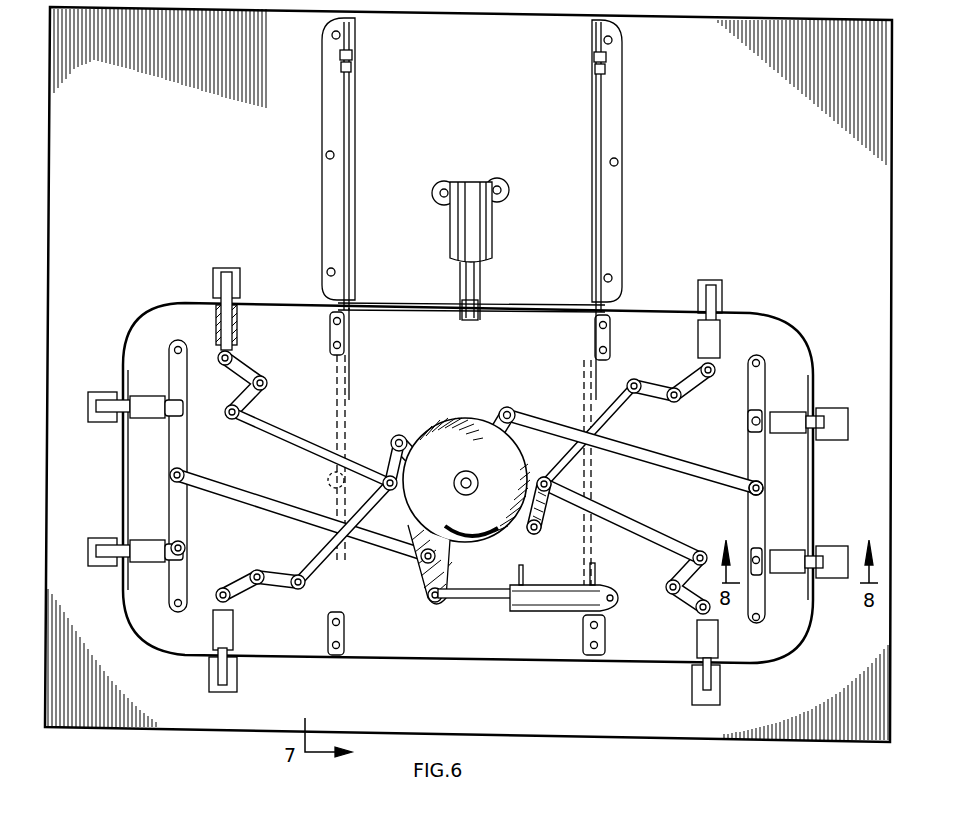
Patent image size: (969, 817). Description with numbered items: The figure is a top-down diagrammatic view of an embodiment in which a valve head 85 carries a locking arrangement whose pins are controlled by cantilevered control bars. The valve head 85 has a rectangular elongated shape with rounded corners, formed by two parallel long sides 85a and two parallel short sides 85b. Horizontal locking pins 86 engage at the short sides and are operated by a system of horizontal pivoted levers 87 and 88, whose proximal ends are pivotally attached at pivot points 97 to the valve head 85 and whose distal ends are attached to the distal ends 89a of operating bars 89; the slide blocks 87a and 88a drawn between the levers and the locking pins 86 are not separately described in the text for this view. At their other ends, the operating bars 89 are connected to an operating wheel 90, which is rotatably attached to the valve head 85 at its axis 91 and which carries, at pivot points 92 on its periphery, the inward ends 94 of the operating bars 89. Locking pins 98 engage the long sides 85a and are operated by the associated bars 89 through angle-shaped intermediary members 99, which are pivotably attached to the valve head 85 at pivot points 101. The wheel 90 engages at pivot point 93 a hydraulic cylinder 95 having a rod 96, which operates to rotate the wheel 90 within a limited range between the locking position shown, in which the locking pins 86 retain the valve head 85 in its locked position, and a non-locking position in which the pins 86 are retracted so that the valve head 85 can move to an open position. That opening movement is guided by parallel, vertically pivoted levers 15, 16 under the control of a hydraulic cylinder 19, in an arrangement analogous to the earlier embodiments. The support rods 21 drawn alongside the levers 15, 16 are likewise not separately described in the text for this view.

The vertically pivoted lever 15 is at (462, 160).
The vertically pivoted lever 16 is at (325, 210).
The hydraulic cylinder 19 is at (492, 232).
The support rod 21 is at (352, 122).
The valve head 85 is at (765, 320).
The long sides 85a is at (650, 305).
The short sides 85b is at (122, 472).
The horizontal locking pins 86 is at (838, 420).
The horizontal pivoted lever 87 is at (760, 455).
The slide block 87a is at (764, 414).
The horizontal pivoted lever 88 is at (762, 520).
The lower slide block 88a is at (760, 577).
The operating bars 89 is at (622, 408).
The distal ends of operating bars 89a is at (746, 503).
The operating wheel 90 is at (465, 418).
The axis 91 is at (462, 477).
The pivot points 92 is at (398, 437).
The pivot point 93 is at (430, 601).
The inward ends of operating bars 94 is at (520, 408).
The hydraulic cylinder 95 is at (545, 611).
The rod 96 is at (470, 600).
The pivot points 97 is at (760, 361).
The locking pins 98 is at (228, 270).
The angle-shaped intermediary members 99 is at (700, 395).
The pivot points 101 is at (268, 381).